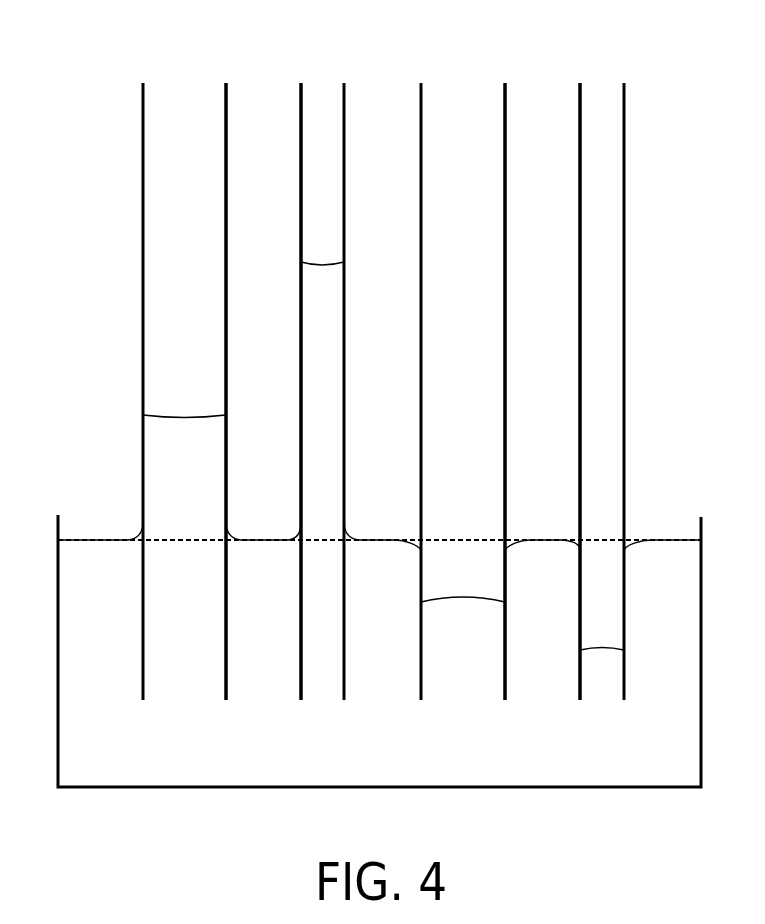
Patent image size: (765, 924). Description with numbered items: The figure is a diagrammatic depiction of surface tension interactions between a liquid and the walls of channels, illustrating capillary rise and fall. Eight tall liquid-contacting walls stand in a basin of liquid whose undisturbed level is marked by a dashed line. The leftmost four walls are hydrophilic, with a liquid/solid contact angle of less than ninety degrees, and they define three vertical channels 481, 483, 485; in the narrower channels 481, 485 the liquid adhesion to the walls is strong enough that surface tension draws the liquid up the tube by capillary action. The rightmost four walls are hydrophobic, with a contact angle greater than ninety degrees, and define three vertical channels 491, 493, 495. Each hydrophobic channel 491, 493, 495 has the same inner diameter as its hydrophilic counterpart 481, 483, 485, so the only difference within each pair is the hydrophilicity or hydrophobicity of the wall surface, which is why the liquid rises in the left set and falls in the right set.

The vertical channel 481 is at (177, 100).
The vertical channel 483 is at (262, 100).
The vertical channel 485 is at (325, 100).
The vertical channel 491 is at (458, 100).
The vertical channel 493 is at (550, 100).
The vertical channel 495 is at (605, 100).